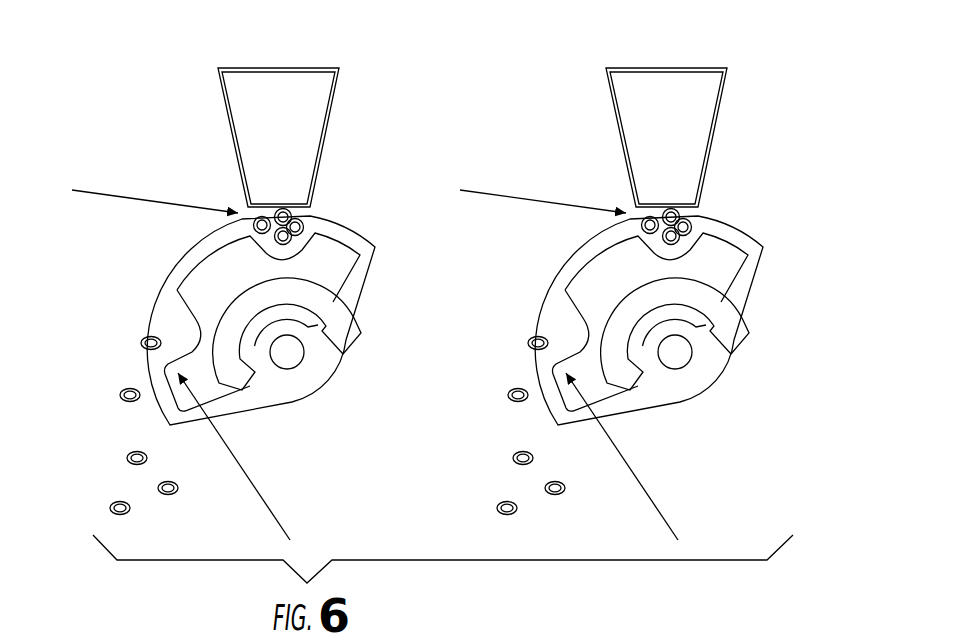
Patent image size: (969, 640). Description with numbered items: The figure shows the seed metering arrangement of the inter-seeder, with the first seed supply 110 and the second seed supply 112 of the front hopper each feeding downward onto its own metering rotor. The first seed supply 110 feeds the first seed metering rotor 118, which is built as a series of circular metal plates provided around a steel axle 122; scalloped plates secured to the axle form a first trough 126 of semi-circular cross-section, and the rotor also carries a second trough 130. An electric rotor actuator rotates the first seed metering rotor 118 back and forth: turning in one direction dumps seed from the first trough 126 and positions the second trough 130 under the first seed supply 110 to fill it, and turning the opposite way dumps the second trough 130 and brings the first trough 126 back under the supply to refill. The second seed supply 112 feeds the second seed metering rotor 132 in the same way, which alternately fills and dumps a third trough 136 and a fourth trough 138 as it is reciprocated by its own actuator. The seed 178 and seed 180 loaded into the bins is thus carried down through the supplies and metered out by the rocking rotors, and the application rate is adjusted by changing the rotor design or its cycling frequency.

The first seed supply 110 is at (267, 58).
The second seed supply 112 is at (655, 58).
The first seed metering rotor 118 is at (365, 325).
The second seed metering rotor 132 is at (752, 325).
The second trough 130 is at (312, 213).
The fourth trough 138 is at (702, 213).
The first trough 126 is at (145, 322).
The third trough 136 is at (532, 322).
The seed 180 is at (128, 455).
The seed 178 is at (170, 497).
The steel axle 122 is at (555, 628).